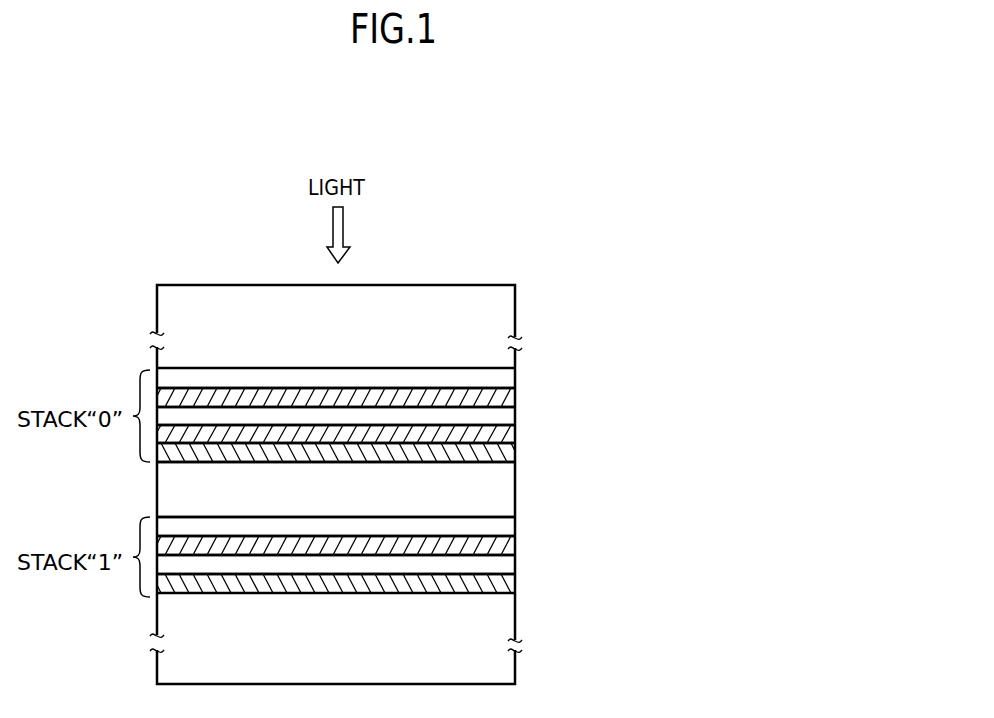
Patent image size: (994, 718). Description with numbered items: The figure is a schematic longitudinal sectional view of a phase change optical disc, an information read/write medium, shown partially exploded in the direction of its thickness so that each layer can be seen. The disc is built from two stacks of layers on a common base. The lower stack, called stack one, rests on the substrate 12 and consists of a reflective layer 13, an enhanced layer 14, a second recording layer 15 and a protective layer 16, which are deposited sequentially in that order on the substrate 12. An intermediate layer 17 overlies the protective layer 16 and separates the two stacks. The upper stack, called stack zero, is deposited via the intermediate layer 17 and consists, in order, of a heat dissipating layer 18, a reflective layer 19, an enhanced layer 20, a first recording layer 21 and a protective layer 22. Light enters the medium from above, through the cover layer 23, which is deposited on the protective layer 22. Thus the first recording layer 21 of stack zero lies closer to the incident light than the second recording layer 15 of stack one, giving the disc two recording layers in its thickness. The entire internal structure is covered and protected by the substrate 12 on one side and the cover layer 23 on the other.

The substrate 12 is at (496, 665).
The reflective layer 13 is at (504, 587).
The enhanced layer 14 is at (504, 567).
The second recording layer 15 is at (504, 547).
The protective layer 16 is at (504, 528).
The intermediate layer 17 is at (504, 490).
The heat dissipating layer 18 is at (506, 452).
The reflective layer 19 is at (504, 433).
The enhanced layer 20 is at (502, 418).
The first recording layer 21 is at (502, 398).
The protective layer 22 is at (502, 378).
The cover layer 23 is at (496, 317).